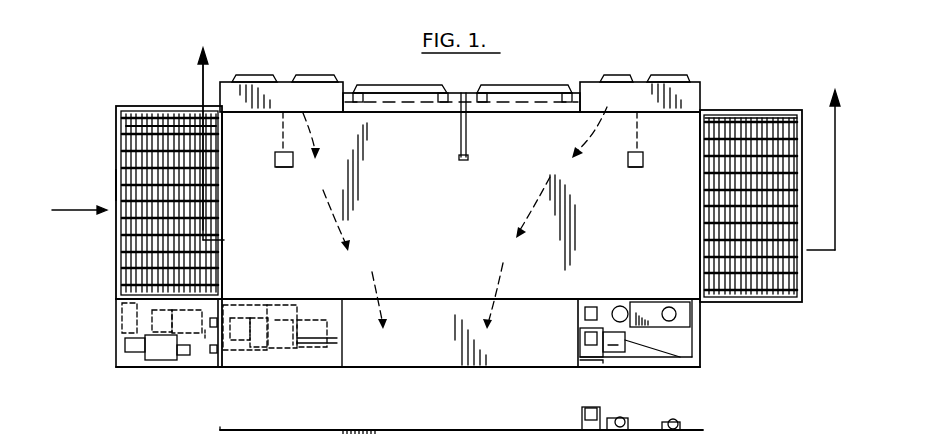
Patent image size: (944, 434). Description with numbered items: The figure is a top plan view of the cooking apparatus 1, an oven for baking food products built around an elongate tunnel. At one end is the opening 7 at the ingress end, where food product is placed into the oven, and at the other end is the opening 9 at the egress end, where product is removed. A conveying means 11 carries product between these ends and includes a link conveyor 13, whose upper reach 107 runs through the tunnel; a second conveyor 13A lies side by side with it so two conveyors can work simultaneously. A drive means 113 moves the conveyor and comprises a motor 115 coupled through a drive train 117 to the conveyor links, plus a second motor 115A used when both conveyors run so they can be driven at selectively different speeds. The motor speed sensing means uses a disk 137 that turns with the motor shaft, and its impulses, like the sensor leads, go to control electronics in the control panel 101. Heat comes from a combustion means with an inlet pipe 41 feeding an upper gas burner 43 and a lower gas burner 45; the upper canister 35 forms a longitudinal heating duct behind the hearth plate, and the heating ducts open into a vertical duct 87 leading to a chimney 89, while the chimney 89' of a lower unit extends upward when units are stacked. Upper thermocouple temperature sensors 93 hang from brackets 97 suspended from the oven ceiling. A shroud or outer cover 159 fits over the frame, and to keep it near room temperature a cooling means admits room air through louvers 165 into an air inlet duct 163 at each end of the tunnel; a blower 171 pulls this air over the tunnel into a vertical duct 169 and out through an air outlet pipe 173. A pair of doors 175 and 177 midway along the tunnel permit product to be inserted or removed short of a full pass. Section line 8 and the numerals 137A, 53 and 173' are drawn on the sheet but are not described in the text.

The cooking apparatus 1 is at (762, 77).
The opening at the ingress end 7 is at (222, 136).
The section line 8 is at (519, 138).
The opening at the egress end 9 is at (720, 121).
The conveying means 11 is at (812, 272).
The link conveyor 13 is at (125, 261).
The second conveyor 13A is at (135, 152).
The upper reach 107 is at (115, 182).
The drive means 113 is at (110, 369).
The drive train 117 is at (115, 321).
The motor 115 is at (201, 308).
The second motor 115A is at (160, 369).
The control panel 101 is at (208, 343).
The disk 137 is at (220, 306).
The control compartment wall 137A is at (173, 418).
The lower gas burner 45 is at (247, 348).
The upper gas burner 43 is at (293, 348).
The inlet pipe 41 is at (340, 342).
The base member 53 is at (275, 430).
The upper canister 35 is at (519, 430).
The shroud or outer cover 159 is at (462, 276).
The air inlet duct 163 is at (236, 80).
The louvers 165 is at (302, 77).
The door 175 is at (380, 85).
The door 177 is at (535, 85).
The upper thermocouple temperature sensor 93 is at (280, 128).
The bracket 97 is at (270, 170).
The vertical duct 169 is at (521, 347).
The air outlet pipe 173 is at (560, 353).
The terminal block 173' is at (597, 334).
The chimney 89 is at (699, 368).
The chimney of the lower unit 89' is at (636, 345).
The vertical duct 87 is at (682, 328).
The blower 171 is at (692, 357).